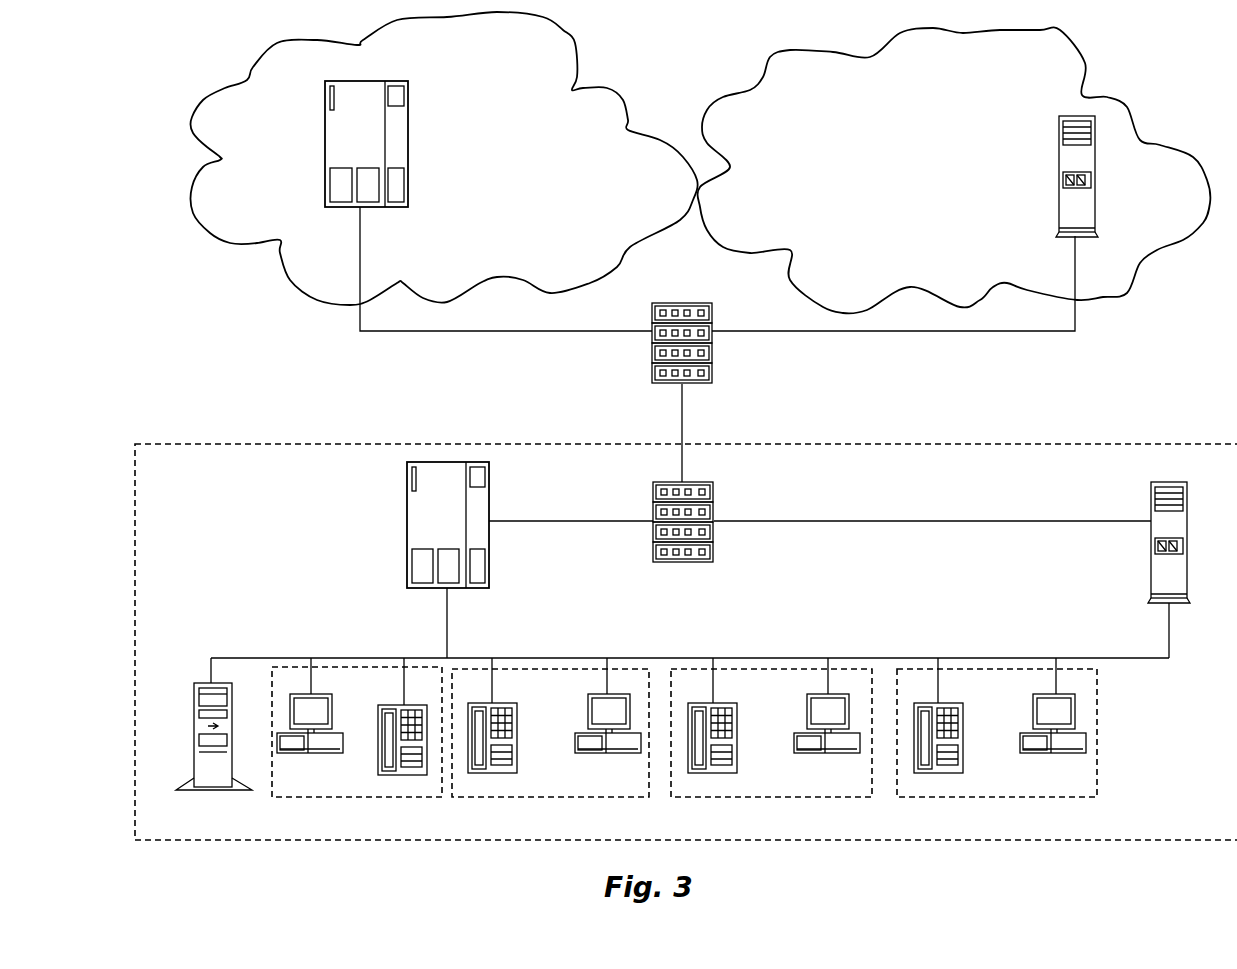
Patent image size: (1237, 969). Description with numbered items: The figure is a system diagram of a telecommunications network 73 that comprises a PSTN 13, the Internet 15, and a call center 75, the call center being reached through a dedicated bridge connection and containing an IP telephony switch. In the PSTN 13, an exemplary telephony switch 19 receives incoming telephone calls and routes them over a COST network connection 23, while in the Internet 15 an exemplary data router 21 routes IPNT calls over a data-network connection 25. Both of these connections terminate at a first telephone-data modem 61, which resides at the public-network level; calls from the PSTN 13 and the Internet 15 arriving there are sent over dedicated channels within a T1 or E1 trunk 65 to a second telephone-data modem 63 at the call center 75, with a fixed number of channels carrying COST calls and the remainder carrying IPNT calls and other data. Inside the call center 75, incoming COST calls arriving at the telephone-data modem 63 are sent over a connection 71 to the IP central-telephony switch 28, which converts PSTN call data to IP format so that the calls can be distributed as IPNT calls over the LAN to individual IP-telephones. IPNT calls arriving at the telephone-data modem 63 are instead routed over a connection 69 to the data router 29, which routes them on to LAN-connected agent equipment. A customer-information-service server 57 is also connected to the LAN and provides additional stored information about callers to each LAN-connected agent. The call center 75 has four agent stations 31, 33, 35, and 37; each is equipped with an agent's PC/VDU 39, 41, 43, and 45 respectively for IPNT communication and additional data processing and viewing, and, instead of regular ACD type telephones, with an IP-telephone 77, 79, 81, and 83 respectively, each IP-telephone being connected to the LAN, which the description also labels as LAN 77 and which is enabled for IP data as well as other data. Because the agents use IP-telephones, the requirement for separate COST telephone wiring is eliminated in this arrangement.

The PSTN 13 is at (191, 117).
The telephony switch 19 is at (325, 155).
The COST network connection 23 is at (360, 265).
The telecommunications network 73 is at (653, 98).
The Internet 15 is at (1162, 146).
The data router 21 is at (1058, 174).
The data-network connection 25 is at (1074, 278).
The first telephone-data modem 61 is at (713, 358).
The trunk 65 is at (684, 455).
The second telephone-data modem 63 is at (715, 521).
The call center 75 is at (1092, 428).
The IP central-telephony switch 28 is at (407, 535).
The connection 71 is at (606, 520).
The connection 69 is at (1074, 520).
The data router 29 is at (1188, 553).
The customer-information-service server 57 is at (193, 735).
The agent station 31 is at (461, 725).
The agent station 33 is at (550, 750).
The agent station 35 is at (771, 750).
The agent station 37 is at (997, 750).
The agent's PC/VDU 39 is at (333, 754).
The agent's PC/VDU 41 is at (585, 754).
The agent's PC/VDU 43 is at (804, 754).
The agent's PC/VDU 45 is at (1029, 754).
The IP-telephone 77 is at (378, 740).
The IP-telephone 79 is at (518, 740).
The IP-telephone 81 is at (738, 740).
The IP-telephone 83 is at (964, 740).